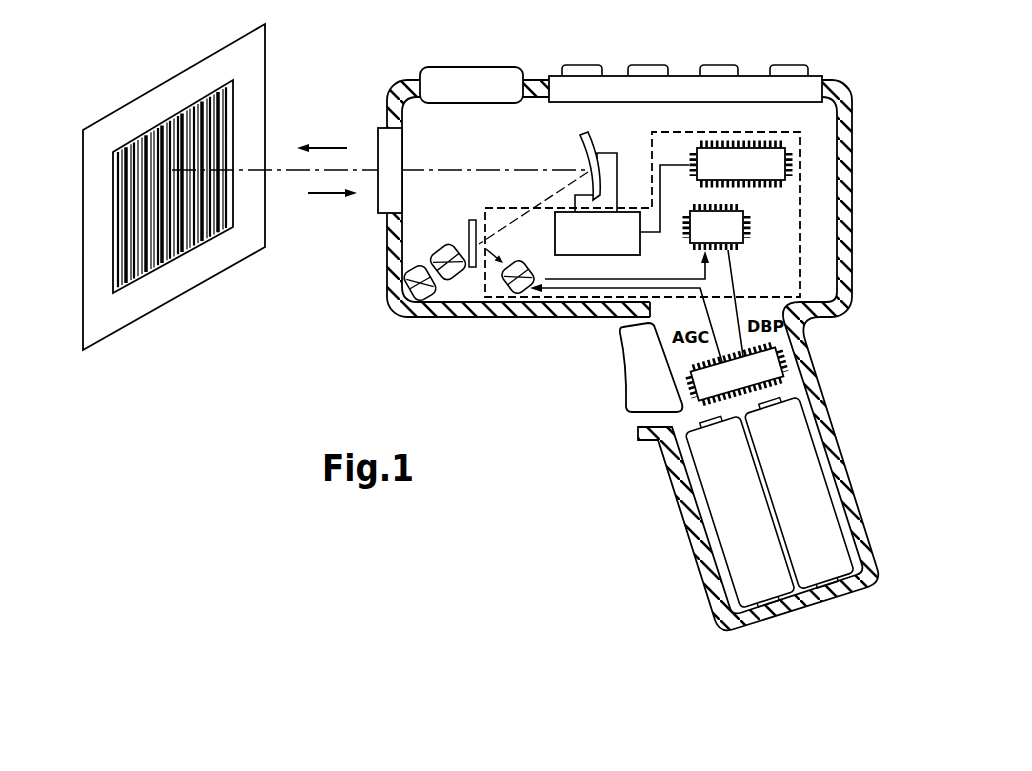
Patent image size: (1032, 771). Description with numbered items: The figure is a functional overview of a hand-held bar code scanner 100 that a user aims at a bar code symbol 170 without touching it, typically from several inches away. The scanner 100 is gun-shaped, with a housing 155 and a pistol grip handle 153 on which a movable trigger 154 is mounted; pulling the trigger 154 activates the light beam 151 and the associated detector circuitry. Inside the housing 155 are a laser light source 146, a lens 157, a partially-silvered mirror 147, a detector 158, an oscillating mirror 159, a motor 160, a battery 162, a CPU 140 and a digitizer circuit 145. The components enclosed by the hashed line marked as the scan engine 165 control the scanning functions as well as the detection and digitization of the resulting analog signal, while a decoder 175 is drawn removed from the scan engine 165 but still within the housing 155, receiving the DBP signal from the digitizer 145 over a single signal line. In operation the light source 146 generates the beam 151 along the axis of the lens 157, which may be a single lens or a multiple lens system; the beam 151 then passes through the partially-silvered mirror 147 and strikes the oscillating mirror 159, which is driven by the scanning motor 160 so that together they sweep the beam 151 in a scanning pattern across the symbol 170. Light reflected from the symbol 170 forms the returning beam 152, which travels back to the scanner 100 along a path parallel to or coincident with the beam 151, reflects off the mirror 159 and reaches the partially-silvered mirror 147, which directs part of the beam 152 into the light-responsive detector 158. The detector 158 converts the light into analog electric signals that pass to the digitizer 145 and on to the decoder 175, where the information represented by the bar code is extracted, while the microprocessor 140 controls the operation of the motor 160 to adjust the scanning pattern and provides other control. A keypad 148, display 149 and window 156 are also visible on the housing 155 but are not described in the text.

The bar code scanner 100 is at (522, 445).
The CPU 140 is at (717, 176).
The digitizer circuit 145 is at (735, 238).
The laser light source 146 is at (428, 312).
The partially-silvered mirror 147 is at (471, 220).
The keypad 148 is at (757, 90).
The display 149 is at (450, 88).
The light beam 151 is at (330, 146).
The light beam 152 is at (332, 196).
The pistol grip handle 153 is at (683, 520).
The movable trigger 154 is at (648, 387).
The housing 155 is at (853, 262).
The window 156 is at (378, 131).
The lens 157 is at (438, 246).
The detector 158 is at (508, 289).
The oscillating mirror 159 is at (592, 138).
The motor 160 is at (620, 246).
The battery 162 is at (813, 563).
The scan engine 165 is at (781, 292).
The bar code symbol 170 is at (159, 132).
The decoder 175 is at (737, 374).